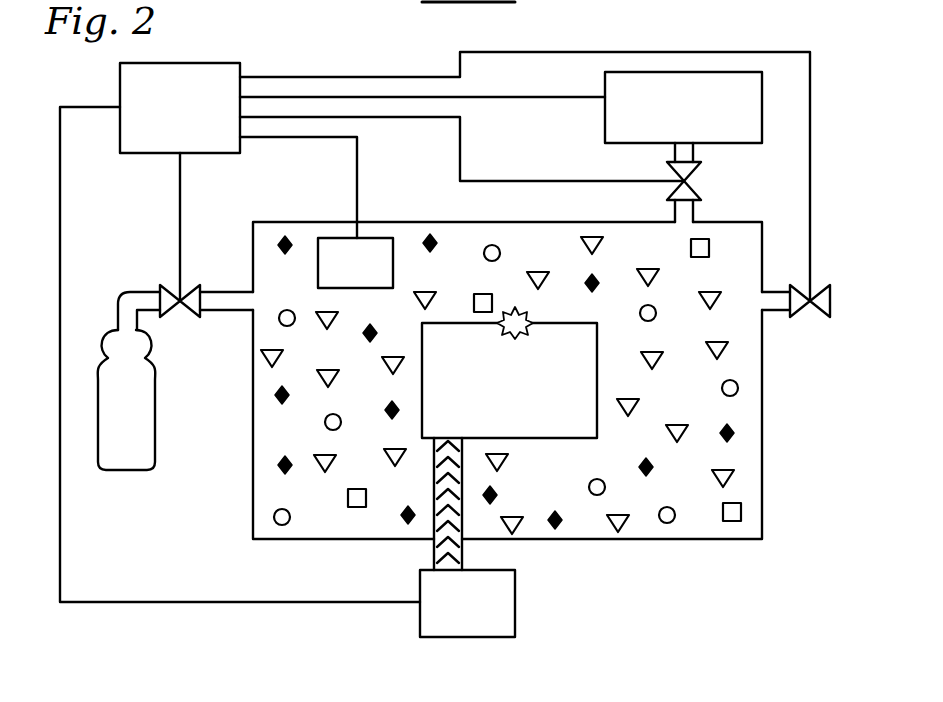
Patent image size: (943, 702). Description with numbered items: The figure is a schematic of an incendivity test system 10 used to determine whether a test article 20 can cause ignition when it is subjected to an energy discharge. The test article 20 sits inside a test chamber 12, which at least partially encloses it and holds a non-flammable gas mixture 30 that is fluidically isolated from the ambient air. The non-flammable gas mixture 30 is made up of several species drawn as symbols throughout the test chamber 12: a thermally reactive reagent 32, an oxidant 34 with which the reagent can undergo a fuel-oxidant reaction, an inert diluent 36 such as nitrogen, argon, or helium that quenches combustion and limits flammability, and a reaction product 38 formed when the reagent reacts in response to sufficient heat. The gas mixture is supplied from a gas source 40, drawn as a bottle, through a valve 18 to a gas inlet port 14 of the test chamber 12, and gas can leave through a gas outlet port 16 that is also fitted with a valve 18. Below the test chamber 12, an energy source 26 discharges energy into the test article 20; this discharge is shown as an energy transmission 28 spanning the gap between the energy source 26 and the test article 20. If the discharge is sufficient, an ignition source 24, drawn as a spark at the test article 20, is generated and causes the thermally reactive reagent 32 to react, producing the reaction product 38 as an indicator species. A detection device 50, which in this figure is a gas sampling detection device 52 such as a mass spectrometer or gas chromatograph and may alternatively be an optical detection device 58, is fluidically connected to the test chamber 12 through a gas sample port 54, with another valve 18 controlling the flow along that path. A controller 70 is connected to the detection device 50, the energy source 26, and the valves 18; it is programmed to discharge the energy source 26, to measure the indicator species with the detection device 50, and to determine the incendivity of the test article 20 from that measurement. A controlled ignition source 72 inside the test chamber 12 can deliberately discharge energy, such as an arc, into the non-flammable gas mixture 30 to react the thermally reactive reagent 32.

The incendivity test system 10 is at (770, 24).
The test chamber 12 is at (437, 222).
The gas inlet port 14 is at (252, 291).
The gas outlet port 16 is at (766, 290).
The valve 18 is at (690, 181).
The test article 20 is at (494, 393).
The ignition source 24 is at (526, 334).
The energy source 26 is at (451, 616).
The energy transmission 28 is at (433, 556).
The non-flammable gas mixture 30 is at (712, 531).
The thermally reactive reagent 32 is at (739, 390).
The oxidant 34 is at (736, 434).
The diluent 36 is at (735, 473).
The reaction product 38 is at (742, 516).
The gas source 40 is at (111, 416).
The detection device 50 is at (667, 121).
The gas sampling detection device 52 is at (605, 90).
The gas sample port 54 is at (672, 221).
The optical detection device 58 is at (603, 127).
The controller 70 is at (164, 121).
The controlled ignition source 72 is at (340, 276).